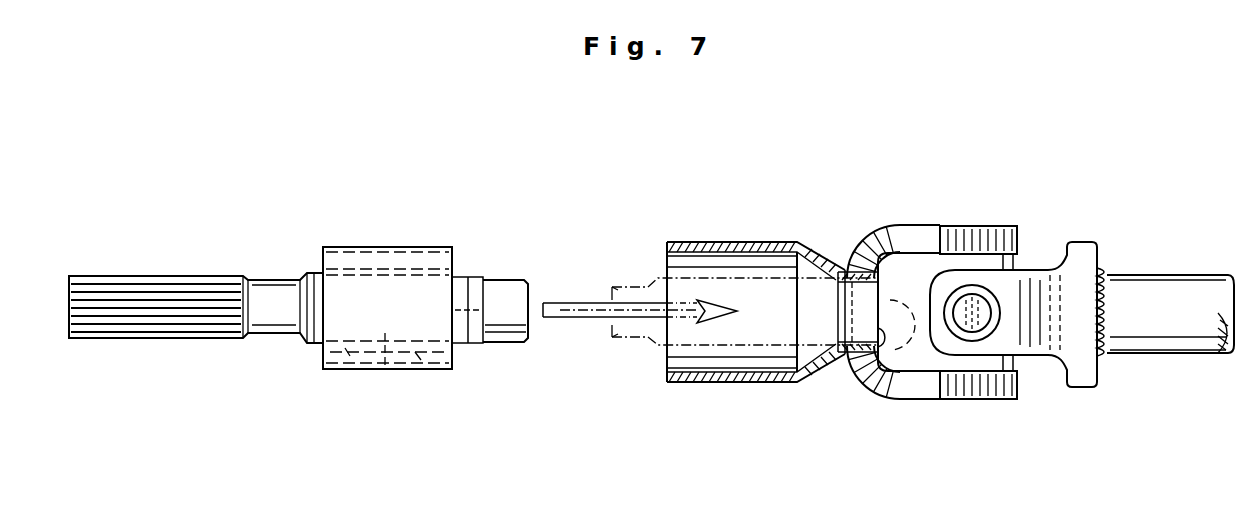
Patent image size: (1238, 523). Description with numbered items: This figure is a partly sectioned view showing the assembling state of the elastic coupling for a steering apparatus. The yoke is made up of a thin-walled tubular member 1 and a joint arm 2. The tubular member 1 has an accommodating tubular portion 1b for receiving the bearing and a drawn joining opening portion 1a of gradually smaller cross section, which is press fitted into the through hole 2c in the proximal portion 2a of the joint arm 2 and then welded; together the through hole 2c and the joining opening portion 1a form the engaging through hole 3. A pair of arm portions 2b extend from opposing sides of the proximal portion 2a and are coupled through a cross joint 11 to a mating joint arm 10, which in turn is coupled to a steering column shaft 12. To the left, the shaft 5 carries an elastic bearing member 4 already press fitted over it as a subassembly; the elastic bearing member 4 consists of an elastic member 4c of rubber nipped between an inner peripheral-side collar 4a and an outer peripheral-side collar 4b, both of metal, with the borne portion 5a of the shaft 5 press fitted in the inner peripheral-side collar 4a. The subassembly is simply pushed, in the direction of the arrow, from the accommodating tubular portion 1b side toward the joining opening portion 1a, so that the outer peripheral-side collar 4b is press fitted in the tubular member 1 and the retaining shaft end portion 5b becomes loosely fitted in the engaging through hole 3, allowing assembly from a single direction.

The tubular member 1 is at (732, 240).
The joining opening portion 1a is at (876, 299).
The accommodating tubular portion 1b is at (698, 257).
The joint arm 2 is at (893, 224).
The proximal portion 2a is at (878, 385).
The arm portions 2b is at (960, 227).
The through hole 2c is at (896, 396).
The engaging through hole 3 is at (858, 318).
The elastic bearing member 4 is at (379, 244).
The inner peripheral-side collar 4a is at (347, 372).
The outer peripheral-side collar 4b is at (408, 246).
The elastic member 4c is at (418, 373).
The shaft 5 is at (215, 271).
The borne portion 5a is at (385, 372).
The retaining shaft end portion 5b is at (515, 284).
The mating joint arm 10 is at (1037, 268).
The cross joint 11 is at (1008, 362).
The steering column shaft 12 is at (1172, 275).